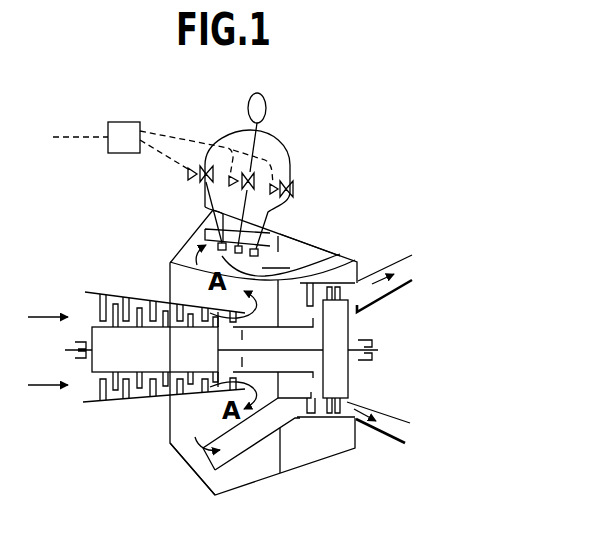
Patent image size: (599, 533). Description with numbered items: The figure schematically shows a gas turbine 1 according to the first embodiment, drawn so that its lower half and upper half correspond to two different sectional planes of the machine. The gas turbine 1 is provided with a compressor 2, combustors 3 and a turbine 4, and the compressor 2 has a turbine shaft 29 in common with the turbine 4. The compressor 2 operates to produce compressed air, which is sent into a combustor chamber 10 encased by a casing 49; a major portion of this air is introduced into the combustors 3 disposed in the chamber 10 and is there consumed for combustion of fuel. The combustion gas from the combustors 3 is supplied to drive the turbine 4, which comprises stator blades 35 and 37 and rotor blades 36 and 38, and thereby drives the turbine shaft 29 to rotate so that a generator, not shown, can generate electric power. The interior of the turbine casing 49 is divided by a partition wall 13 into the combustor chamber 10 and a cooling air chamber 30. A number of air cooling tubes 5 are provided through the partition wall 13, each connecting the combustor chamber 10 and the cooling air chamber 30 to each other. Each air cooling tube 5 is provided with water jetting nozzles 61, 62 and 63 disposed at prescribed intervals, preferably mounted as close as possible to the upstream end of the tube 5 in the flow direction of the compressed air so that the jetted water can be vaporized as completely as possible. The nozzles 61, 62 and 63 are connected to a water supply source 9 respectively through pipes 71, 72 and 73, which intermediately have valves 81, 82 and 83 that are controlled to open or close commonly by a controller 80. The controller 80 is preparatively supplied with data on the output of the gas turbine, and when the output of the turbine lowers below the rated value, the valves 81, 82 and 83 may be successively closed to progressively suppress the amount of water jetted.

The gas turbine 1 is at (115, 481).
The compressor 2 is at (131, 397).
The combustors 3 is at (230, 460).
The turbine 4 is at (350, 377).
The air cooling tubes 5 is at (280, 246).
The water supply source 9 is at (266, 100).
The combustor chamber 10 is at (258, 475).
The partition wall 13 is at (283, 470).
The turbine shaft 29 is at (302, 349).
The cooling air chamber 30 is at (313, 248).
The stator blades 35 is at (309, 418).
The rotor blades 36 is at (328, 418).
The stator blades 37 is at (349, 419).
The rotor blades 38 is at (357, 406).
The casing 49 is at (195, 468).
The water jetting nozzle 61 is at (170, 262).
The water jetting nozzle 62 is at (357, 262).
The water jetting nozzle 63 is at (340, 254).
The pipe 71 is at (205, 192).
The pipe 72 is at (213, 205).
The pipe 73 is at (205, 229).
The controller 80 is at (125, 122).
The valve 81 is at (206, 167).
The valve 82 is at (247, 171).
The valve 83 is at (294, 182).